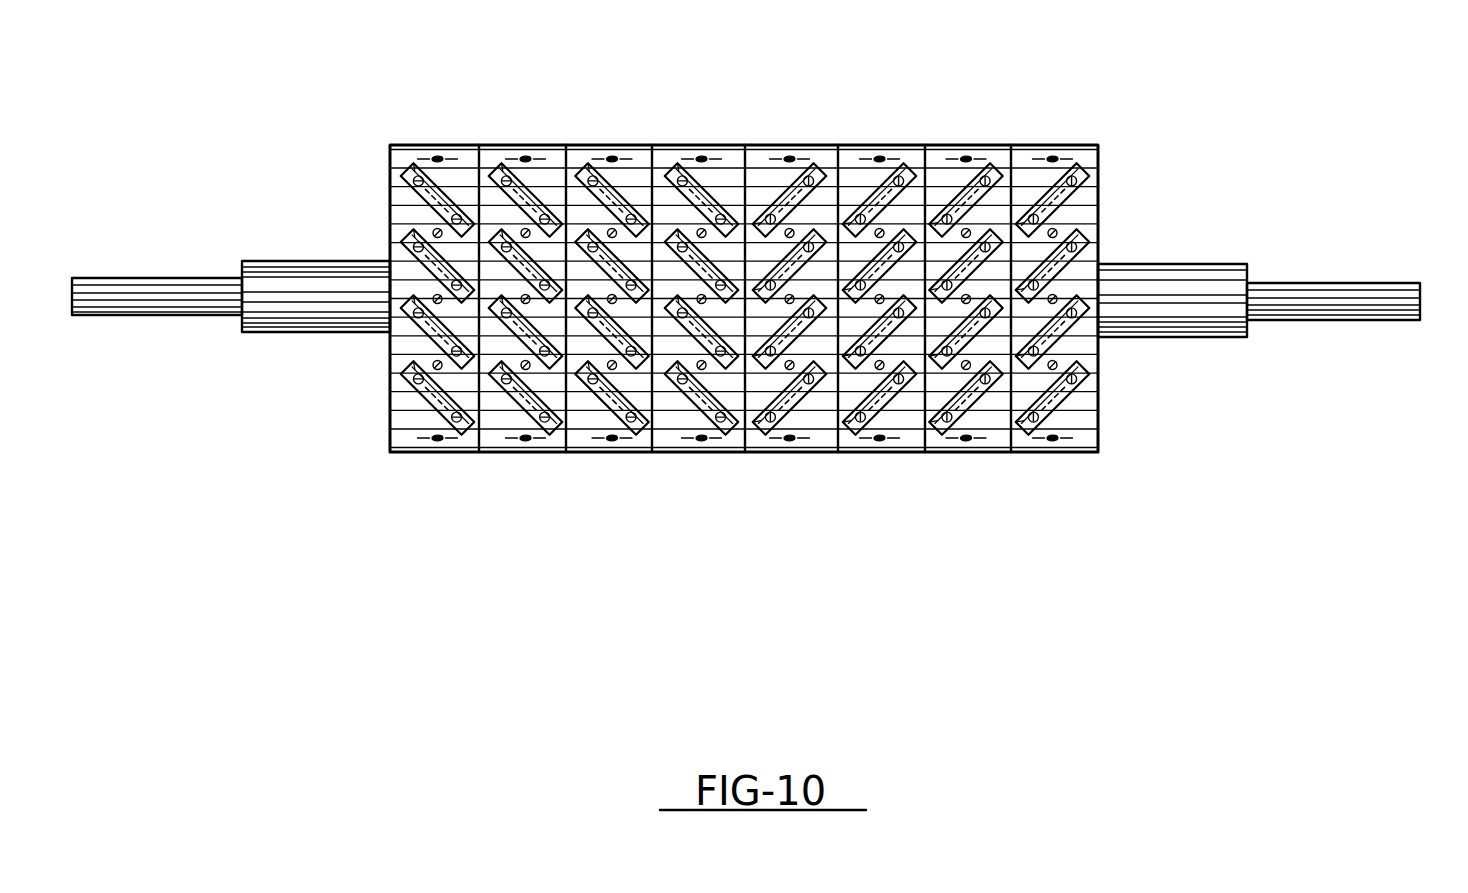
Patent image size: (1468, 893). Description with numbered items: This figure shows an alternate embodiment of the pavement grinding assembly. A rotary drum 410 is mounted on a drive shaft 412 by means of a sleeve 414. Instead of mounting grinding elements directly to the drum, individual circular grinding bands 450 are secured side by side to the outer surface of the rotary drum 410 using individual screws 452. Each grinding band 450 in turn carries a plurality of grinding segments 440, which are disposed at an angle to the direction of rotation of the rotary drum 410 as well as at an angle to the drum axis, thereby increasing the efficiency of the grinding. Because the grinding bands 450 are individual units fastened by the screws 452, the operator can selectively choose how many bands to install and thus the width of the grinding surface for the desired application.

The rotary drum 410 is at (685, 35).
The drive shaft 412 is at (1343, 305).
The sleeve 414 is at (1217, 310).
The grinding segments 440 is at (888, 400).
The circular grinding bands 450 is at (860, 143).
The screws 452 is at (548, 418).